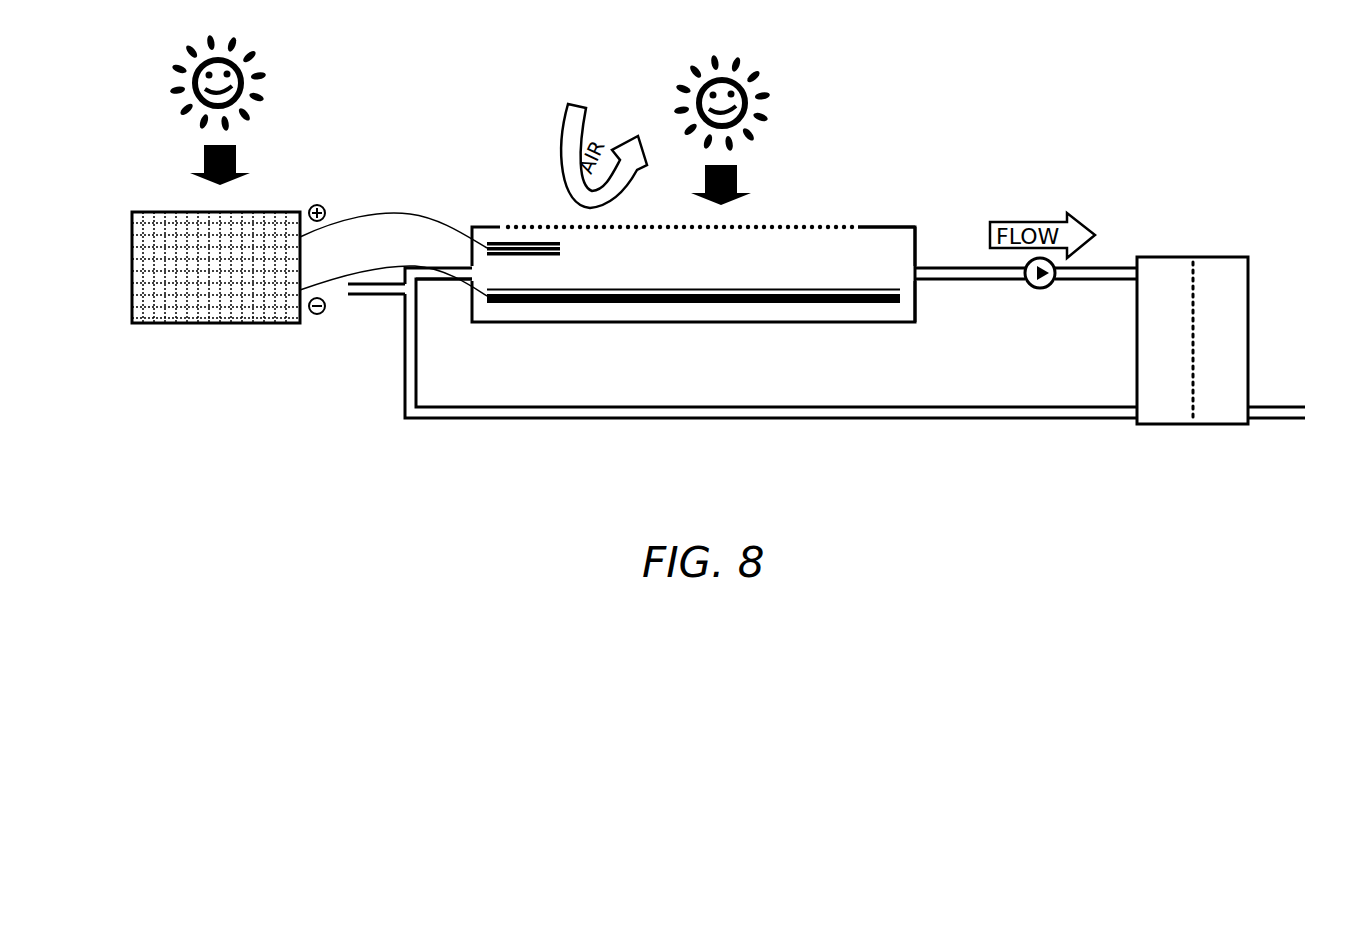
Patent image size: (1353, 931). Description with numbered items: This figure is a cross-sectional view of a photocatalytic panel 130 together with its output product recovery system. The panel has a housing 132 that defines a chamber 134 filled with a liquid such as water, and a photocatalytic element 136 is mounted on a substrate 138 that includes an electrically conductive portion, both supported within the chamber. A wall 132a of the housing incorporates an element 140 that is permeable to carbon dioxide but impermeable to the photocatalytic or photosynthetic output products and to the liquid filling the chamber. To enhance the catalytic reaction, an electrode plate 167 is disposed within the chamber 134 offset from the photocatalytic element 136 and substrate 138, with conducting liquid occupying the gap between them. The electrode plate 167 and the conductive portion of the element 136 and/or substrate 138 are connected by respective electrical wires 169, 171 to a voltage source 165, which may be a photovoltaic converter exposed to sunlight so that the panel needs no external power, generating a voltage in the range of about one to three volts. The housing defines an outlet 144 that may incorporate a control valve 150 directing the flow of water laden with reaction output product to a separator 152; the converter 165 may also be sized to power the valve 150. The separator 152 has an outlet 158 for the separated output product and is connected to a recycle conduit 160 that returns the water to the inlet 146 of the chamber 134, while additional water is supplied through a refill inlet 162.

The photocatalytic panel 130 is at (744, 264).
The housing 132 is at (918, 240).
The wall 132a is at (886, 227).
The chamber 134 is at (832, 270).
The photocatalytic element 136 is at (687, 292).
The substrate 138 is at (783, 303).
The permeable element 140 is at (770, 227).
The outlet 144 is at (950, 280).
The inlet 146 is at (452, 267).
The control valve 150 is at (1040, 288).
The separator 152 is at (1215, 257).
The outlet 158 is at (1276, 407).
The recycle conduit 160 is at (1100, 419).
The refill inlet 162 is at (355, 297).
The voltage source 165 is at (281, 213).
The electrode plate 167 is at (532, 256).
The electrical wire 169 is at (397, 213).
The electrical wire 171 is at (338, 279).